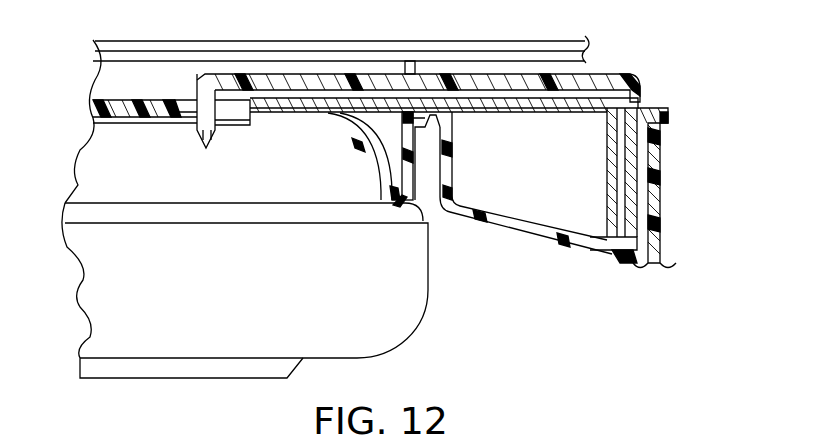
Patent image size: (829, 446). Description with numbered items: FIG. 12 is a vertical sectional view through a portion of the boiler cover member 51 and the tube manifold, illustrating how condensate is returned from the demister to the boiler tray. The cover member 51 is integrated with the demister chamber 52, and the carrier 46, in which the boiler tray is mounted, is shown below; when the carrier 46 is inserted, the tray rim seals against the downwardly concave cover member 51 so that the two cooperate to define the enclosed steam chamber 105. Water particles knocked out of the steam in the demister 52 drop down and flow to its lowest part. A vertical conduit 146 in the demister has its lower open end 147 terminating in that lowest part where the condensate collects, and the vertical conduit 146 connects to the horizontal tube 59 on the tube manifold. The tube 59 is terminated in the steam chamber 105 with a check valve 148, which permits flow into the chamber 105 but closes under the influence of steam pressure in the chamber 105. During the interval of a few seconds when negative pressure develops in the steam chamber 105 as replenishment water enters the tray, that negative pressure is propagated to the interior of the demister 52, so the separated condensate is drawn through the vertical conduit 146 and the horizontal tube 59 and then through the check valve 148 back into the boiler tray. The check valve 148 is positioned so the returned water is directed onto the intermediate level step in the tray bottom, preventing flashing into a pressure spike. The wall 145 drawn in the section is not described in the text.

The horizontal tube 59 is at (615, 77).
The vertical conduit 146 is at (632, 167).
The demister chamber 52 is at (662, 228).
The lower open end 147 is at (622, 240).
The sloped support wall 145 is at (533, 237).
The carrier 46 is at (428, 295).
The boiler tray cover member 51 is at (363, 165).
The steam chamber 105 is at (272, 189).
The check valve 148 is at (200, 132).